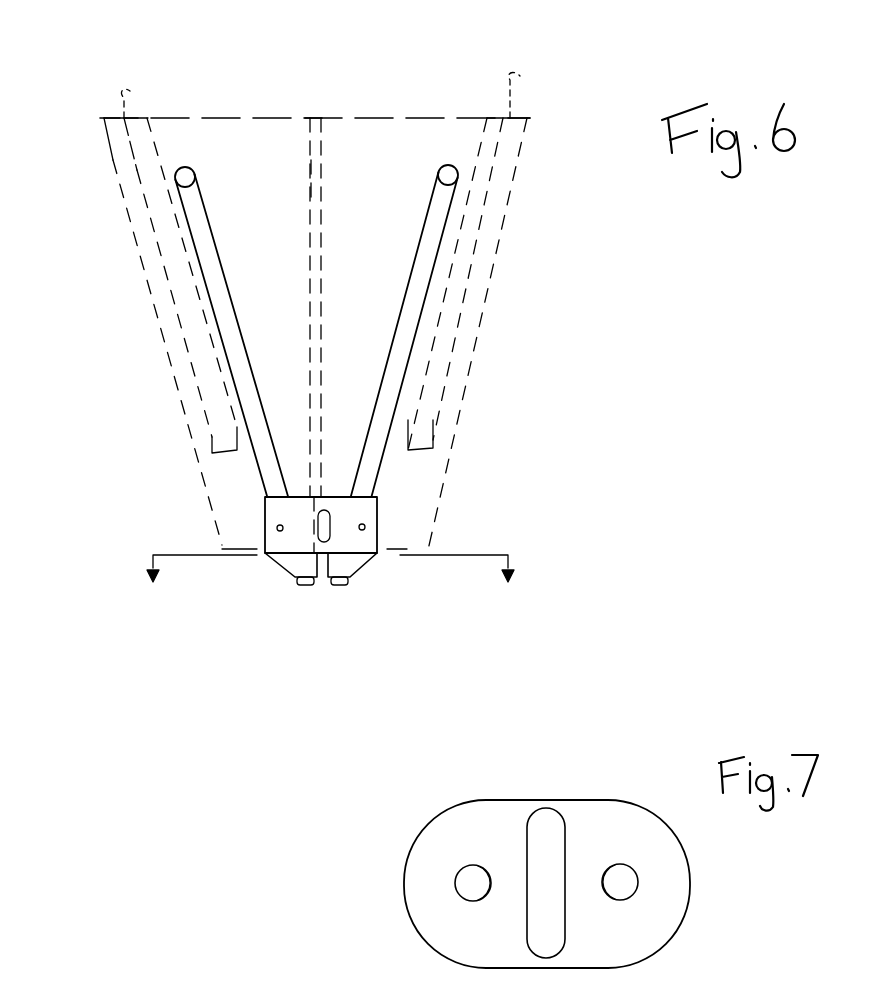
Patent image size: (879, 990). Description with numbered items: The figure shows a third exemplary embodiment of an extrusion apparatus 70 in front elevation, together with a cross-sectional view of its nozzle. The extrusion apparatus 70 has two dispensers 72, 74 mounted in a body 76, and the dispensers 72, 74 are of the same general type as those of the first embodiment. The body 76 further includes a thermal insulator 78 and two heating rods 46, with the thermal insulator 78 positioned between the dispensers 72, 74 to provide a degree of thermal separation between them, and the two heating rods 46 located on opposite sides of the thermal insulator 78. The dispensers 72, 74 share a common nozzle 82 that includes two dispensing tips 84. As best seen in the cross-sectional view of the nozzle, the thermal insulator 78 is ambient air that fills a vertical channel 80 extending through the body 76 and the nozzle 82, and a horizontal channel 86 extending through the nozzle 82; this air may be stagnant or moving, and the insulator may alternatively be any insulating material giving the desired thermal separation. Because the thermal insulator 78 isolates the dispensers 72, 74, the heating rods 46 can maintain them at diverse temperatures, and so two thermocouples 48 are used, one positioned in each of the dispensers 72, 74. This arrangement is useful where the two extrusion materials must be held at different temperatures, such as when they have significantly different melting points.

In FIG. 6, the heating rod 46 is at (158, 210).
In FIG. 6, the thermocouple 48 is at (277, 528).
In FIG. 6, the extrusion apparatus 70 is at (570, 312).
In FIG. 6, the dispenser 72 is at (207, 263).
In FIG. 6, the dispenser 74 is at (425, 263).
In FIG. 6, the body 76 is at (377, 147).
In FIG. 6, the thermal insulator 78 is at (313, 116).
In FIG. 7, the thermal insulator 78 is at (547, 847).
In FIG. 6, the vertical channel 80 is at (325, 170).
In FIG. 7, the vertical channel 80 is at (567, 840).
In FIG. 6, the nozzle 82 is at (367, 510).
In FIG. 7, the nozzle 82 is at (657, 848).
In FIG. 6, the dispensing tip 84 is at (307, 586).
In FIG. 6, the horizontal channel 86 is at (316, 528).